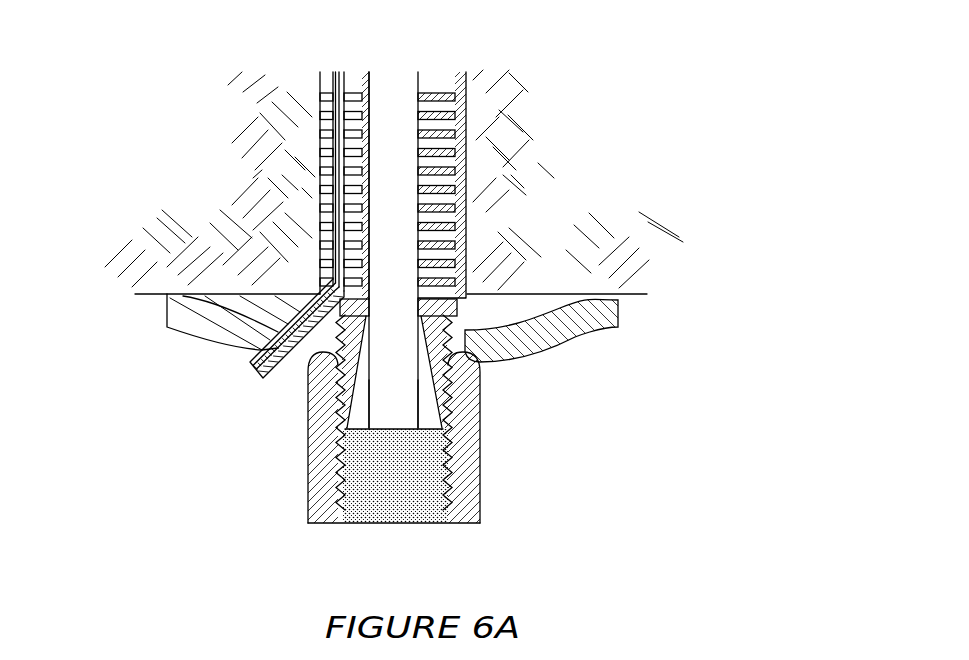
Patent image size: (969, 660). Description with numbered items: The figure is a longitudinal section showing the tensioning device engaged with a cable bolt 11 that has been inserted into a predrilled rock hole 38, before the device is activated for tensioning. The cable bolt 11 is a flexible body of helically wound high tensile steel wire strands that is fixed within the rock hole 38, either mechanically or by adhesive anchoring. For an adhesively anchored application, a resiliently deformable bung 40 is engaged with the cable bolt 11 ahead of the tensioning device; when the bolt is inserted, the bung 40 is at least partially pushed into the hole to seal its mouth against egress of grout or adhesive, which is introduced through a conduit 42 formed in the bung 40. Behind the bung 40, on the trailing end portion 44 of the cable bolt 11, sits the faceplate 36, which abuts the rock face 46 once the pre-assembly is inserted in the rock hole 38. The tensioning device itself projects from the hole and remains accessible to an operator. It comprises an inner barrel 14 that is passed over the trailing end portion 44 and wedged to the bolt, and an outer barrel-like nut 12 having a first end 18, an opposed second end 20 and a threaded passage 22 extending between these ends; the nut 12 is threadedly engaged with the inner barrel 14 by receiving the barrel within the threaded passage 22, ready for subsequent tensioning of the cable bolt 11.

The cable bolt 11 is at (395, 175).
The nut 12 is at (467, 468).
The inner barrel 14 is at (338, 357).
The first end 18 is at (460, 350).
The second end 20 is at (460, 523).
The threaded passage 22 is at (372, 507).
The faceplate 36 is at (572, 327).
The rock hole 38 is at (473, 225).
The bung 40 is at (450, 188).
The conduit 42 is at (250, 364).
The trailing end portion 44 is at (390, 390).
The rock face 46 is at (233, 295).